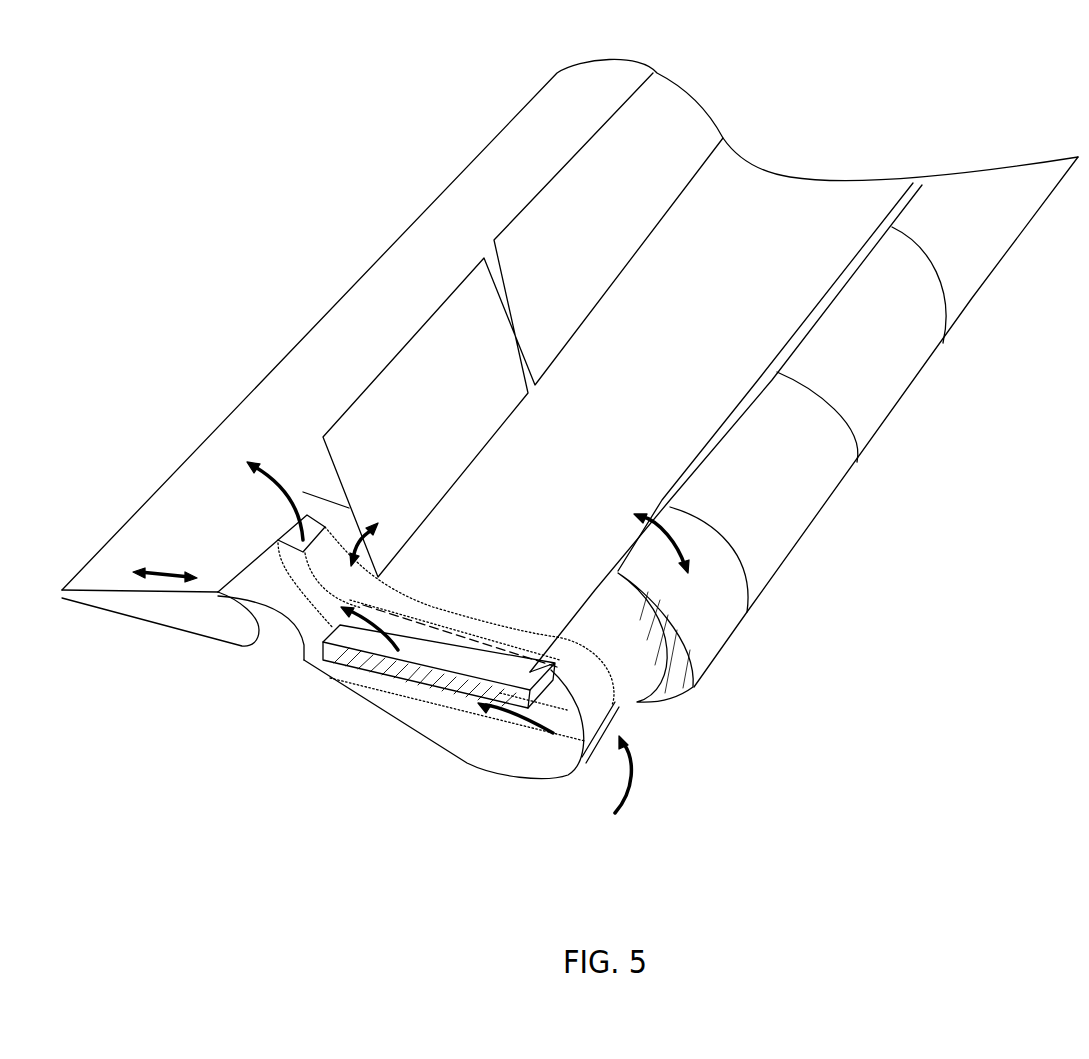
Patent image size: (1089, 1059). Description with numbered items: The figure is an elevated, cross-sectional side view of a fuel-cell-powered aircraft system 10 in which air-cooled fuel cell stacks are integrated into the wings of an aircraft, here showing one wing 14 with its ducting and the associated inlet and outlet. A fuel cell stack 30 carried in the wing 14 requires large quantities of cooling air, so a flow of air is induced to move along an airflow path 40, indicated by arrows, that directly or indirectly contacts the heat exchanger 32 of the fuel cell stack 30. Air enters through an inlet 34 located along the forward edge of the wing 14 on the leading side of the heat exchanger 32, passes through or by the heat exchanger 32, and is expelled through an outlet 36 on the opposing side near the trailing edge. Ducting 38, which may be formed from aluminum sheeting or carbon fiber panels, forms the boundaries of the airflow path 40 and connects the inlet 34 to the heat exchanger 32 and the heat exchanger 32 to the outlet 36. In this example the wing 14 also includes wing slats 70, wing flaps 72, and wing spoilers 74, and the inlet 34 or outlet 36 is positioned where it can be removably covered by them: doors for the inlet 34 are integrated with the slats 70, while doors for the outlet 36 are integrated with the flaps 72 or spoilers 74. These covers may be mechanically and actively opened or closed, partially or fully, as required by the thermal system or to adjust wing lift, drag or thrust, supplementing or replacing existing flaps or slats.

The fuel-cell-powered aircraft system 10 is at (255, 181).
The wing 14 is at (945, 78).
The fuel cell stack 30 is at (446, 616).
The heat exchanger 32 is at (347, 658).
The inlet 34 is at (612, 710).
The outlet 36 is at (306, 537).
The ducting 38 is at (424, 707).
The airflow path 40 is at (277, 496).
The wing slats 70 is at (895, 337).
The wing flaps 72 is at (317, 414).
The wing spoilers 74 is at (600, 230).